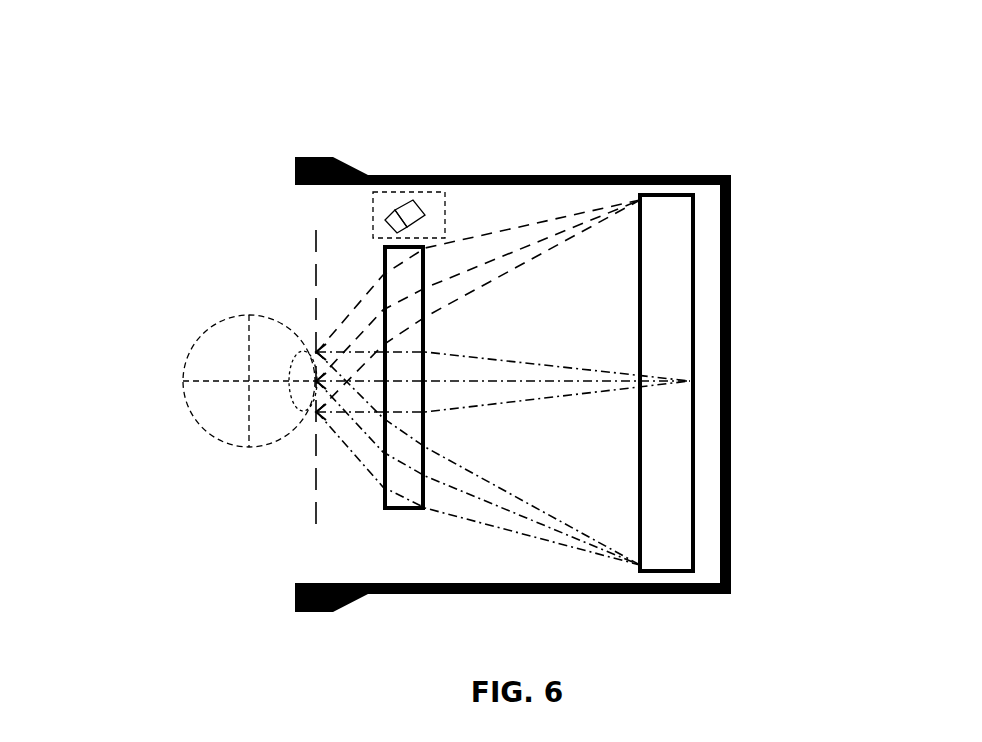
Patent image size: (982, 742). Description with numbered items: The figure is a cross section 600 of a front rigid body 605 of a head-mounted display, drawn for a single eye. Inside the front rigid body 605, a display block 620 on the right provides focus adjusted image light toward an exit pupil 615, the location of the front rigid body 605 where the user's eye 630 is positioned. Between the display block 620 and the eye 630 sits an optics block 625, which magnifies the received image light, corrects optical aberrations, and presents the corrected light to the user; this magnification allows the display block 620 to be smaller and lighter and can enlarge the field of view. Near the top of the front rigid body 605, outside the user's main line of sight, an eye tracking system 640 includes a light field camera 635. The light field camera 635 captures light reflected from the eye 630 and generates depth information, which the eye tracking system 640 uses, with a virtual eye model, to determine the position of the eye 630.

The cross section 600 is at (43, 76).
The front rigid body 605 is at (700, 172).
The exit pupil 615 is at (313, 516).
The display block 620 is at (697, 222).
The optics block 625 is at (382, 260).
The eye 630 is at (191, 344).
The light field camera 635 is at (398, 198).
The eye tracking system 640 is at (433, 191).